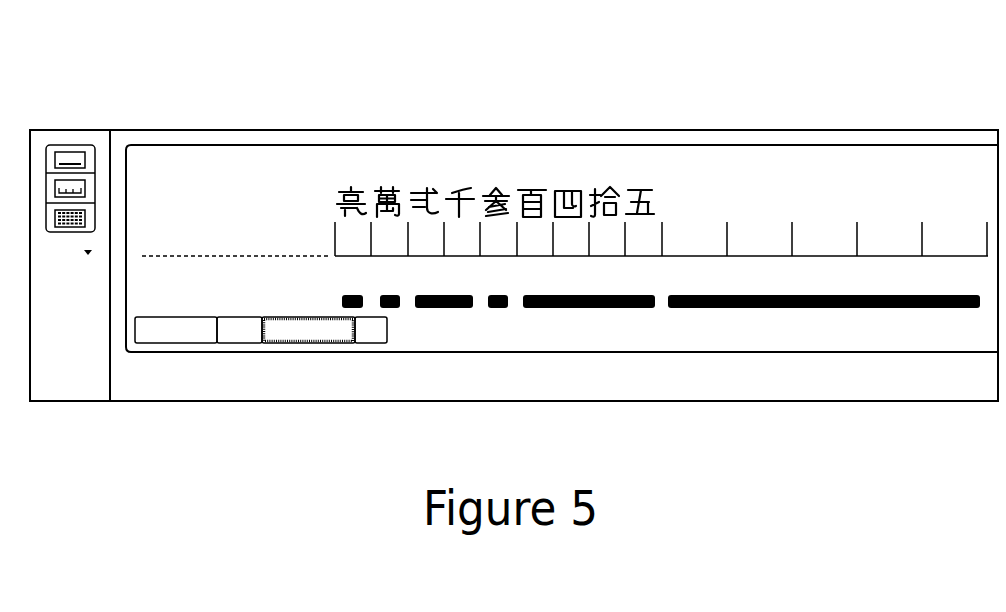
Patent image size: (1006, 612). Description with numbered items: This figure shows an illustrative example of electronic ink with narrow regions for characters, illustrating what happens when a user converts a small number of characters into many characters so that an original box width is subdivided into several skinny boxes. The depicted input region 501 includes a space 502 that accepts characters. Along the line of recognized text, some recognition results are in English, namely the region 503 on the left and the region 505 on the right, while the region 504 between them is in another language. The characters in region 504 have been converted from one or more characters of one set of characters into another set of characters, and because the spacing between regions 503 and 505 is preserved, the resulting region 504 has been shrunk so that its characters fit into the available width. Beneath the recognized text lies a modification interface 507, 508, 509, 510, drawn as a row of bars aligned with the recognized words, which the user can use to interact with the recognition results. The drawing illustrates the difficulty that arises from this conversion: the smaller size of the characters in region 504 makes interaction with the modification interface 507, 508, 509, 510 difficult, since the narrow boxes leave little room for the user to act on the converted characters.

The input region 501 is at (546, 130).
The space 502 is at (677, 157).
The English recognition result region 503 is at (335, 107).
The other-language region 504 is at (662, 107).
The English recognition result region 505 is at (662, 107).
The modification interface 507 is at (430, 309).
The modification interface 508 is at (497, 309).
The modification interface 509 is at (585, 309).
The modification interface 510 is at (818, 309).